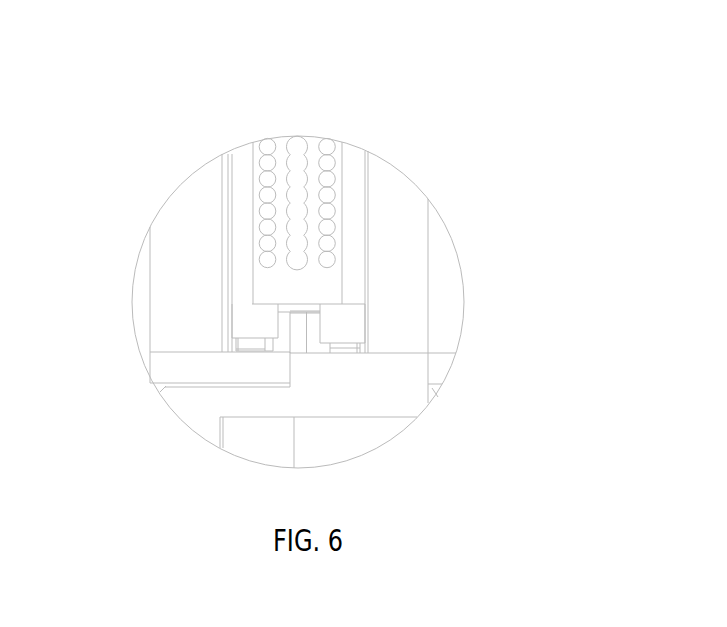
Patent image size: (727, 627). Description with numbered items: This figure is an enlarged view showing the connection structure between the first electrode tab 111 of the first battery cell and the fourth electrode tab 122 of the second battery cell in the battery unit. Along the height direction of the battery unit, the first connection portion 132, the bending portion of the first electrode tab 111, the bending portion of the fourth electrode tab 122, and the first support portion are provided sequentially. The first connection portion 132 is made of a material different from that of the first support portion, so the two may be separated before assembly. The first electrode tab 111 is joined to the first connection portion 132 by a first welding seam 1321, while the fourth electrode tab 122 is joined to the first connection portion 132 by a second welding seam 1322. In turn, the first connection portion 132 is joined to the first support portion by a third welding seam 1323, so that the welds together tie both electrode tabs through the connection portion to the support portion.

The first electrode tab 111 is at (242, 306).
The fourth electrode tab 122 is at (350, 320).
The first connection portion 132 is at (322, 290).
The first welding seam 1321 is at (268, 192).
The second welding seam 1322 is at (330, 210).
The third welding seam 1323 is at (298, 168).